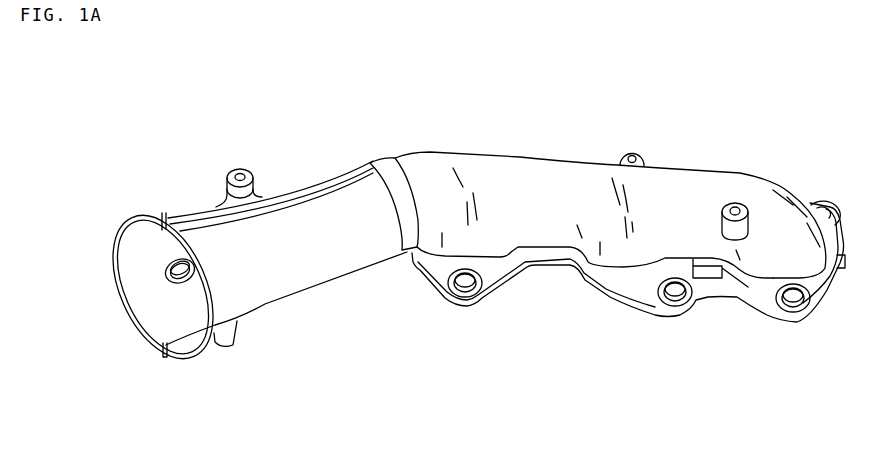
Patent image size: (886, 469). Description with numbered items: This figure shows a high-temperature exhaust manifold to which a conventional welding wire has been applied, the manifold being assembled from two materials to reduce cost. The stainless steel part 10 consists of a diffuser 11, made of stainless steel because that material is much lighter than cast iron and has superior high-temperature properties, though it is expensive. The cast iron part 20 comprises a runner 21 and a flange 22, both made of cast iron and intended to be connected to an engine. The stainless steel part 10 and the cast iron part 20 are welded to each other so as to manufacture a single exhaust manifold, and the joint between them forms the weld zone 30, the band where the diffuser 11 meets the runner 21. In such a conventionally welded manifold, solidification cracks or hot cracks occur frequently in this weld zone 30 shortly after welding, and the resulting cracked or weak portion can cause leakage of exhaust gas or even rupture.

The stainless steel part 10 is at (277, 168).
The diffuser 11 is at (291, 279).
The weld zone 30 is at (388, 172).
The cast iron part 20 is at (640, 413).
The runner 21 is at (547, 202).
The flange 22 is at (641, 281).